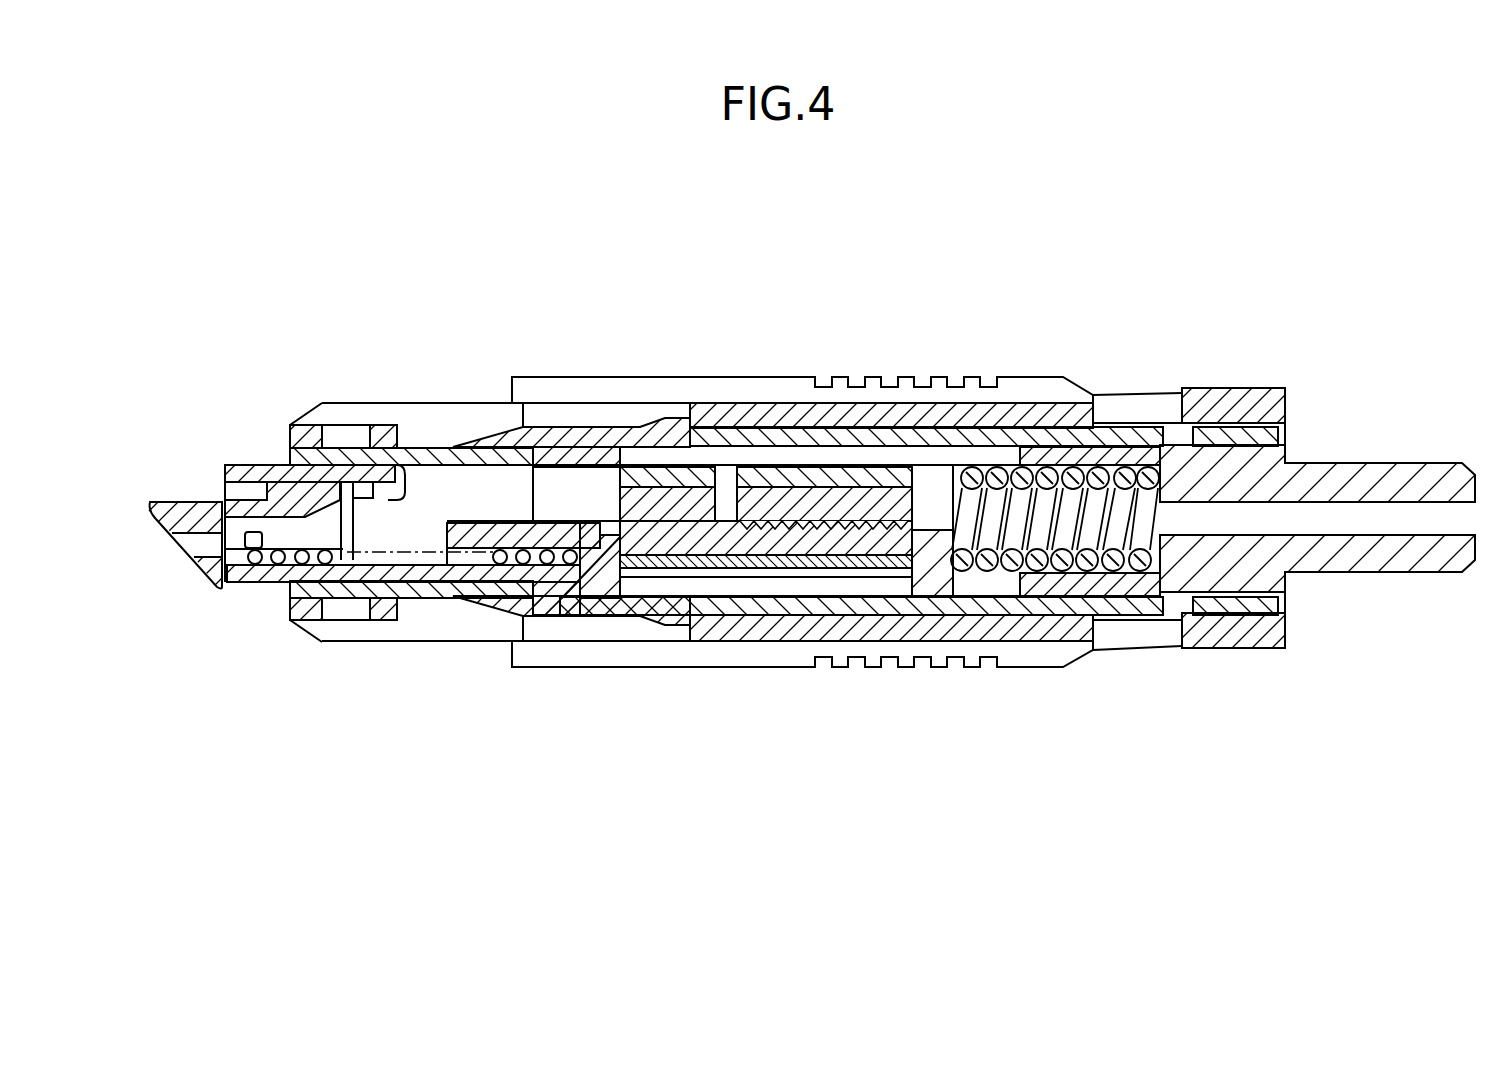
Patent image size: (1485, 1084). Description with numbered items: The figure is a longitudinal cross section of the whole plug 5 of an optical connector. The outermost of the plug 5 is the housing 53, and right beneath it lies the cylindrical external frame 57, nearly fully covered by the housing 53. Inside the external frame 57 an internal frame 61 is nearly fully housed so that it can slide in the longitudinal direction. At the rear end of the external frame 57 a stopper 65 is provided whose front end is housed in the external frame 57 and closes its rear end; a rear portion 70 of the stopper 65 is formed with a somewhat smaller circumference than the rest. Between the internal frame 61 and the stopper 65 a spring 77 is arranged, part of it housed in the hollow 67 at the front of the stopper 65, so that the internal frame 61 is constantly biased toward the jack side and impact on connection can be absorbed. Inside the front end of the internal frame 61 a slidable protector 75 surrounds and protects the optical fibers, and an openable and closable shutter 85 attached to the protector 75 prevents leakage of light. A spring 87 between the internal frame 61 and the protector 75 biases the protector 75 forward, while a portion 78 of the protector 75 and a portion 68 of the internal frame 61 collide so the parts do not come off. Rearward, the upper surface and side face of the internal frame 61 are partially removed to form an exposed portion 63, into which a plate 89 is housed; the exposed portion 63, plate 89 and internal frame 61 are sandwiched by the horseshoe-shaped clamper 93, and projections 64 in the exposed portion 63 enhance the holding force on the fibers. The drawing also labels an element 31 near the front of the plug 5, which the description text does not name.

The plug 5 is at (1141, 661).
The tapered sleeve 31 is at (445, 443).
The housing 53 is at (428, 402).
The external frame 57 is at (510, 594).
The internal frame 61 is at (598, 582).
The exposed portion 63 is at (678, 515).
The projections 64 is at (875, 535).
The stopper 65 is at (1250, 477).
The hollow 67 is at (1145, 470).
The portion of the internal frame 68 is at (375, 470).
The portion of the rear end of the stopper 70 is at (1345, 552).
The protector 75 is at (285, 487).
The spring 77 is at (1000, 490).
The portion of the protector 78 is at (393, 478).
The shutter 85 is at (177, 500).
The spring 87 is at (272, 567).
The plate 89 is at (778, 490).
The clamper 93 is at (820, 568).